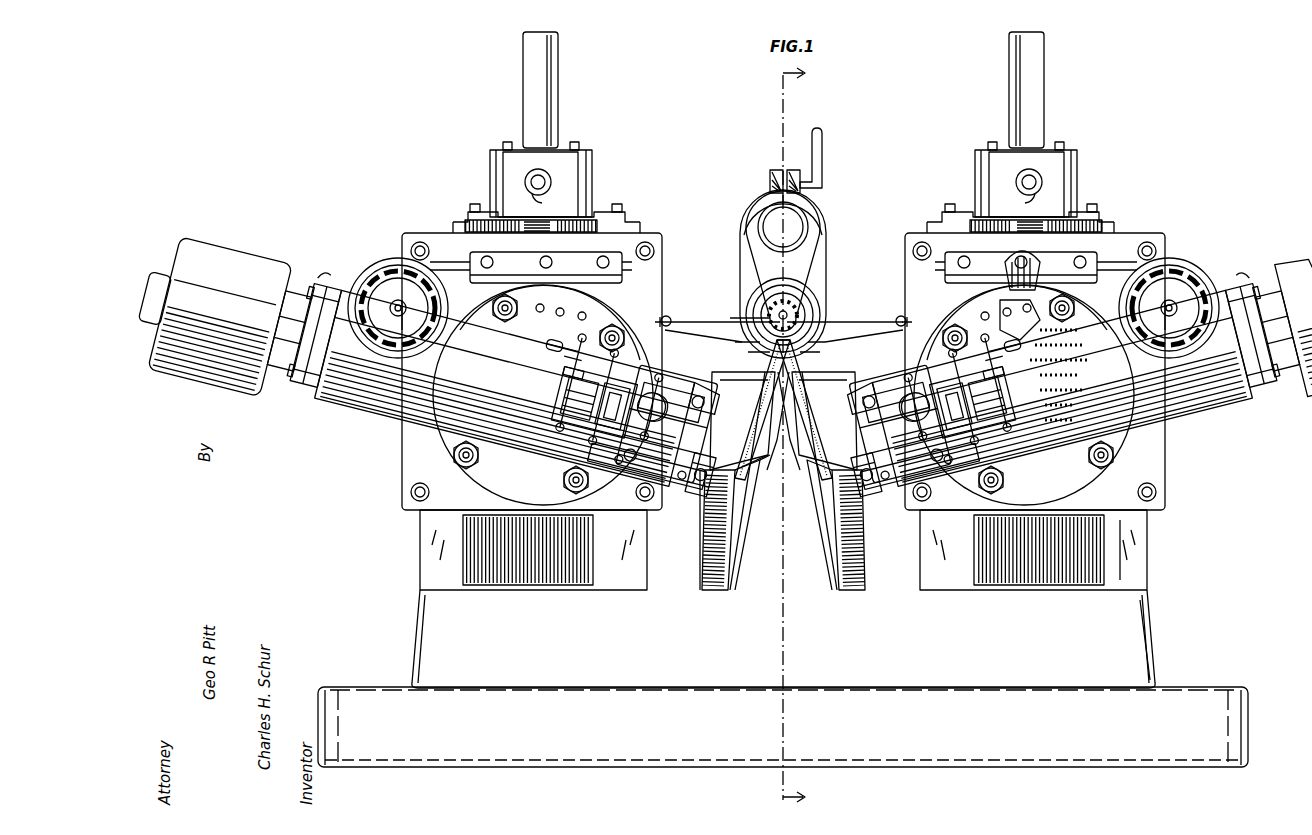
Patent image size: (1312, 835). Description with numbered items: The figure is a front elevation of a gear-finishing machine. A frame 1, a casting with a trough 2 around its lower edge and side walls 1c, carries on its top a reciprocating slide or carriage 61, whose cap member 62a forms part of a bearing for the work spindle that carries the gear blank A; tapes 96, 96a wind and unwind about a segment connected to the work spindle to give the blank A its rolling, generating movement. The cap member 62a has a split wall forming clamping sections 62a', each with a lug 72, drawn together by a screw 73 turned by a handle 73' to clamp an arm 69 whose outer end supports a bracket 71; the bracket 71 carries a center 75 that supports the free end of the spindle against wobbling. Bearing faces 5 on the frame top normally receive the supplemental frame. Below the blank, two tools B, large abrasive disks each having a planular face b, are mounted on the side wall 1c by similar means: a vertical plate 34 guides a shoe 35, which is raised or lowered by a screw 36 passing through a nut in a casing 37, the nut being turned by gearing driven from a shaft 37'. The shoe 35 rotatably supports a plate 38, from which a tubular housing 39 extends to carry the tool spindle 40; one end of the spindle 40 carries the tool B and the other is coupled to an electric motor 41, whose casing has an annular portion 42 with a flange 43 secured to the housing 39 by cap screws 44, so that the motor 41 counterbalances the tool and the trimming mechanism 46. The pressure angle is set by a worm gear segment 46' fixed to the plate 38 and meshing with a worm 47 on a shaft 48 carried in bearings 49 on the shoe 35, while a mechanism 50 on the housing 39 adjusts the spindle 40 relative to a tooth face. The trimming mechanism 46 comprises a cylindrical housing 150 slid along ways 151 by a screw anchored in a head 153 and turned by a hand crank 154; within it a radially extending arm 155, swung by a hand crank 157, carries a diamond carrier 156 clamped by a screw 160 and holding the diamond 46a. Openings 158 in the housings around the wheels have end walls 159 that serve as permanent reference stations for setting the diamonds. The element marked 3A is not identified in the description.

The frame 1 is at (767, 639).
The side wall 1c is at (1082, 639).
The trough 2 is at (1185, 705).
The pedestal column 3A is at (1120, 550).
The bearing face 5 is at (806, 432).
The vertical plate 34 is at (783, 550).
The shoe 35 is at (783, 304).
The screw 36 is at (552, 225).
The casing 37 is at (783, 132).
The shaft 37' is at (783, 192).
The plate 38 is at (783, 371).
The tubular member 39 is at (505, 388).
The tool spindle 40 is at (1061, 388).
The electric motor 41 is at (719, 314).
The extended annular portion 42 is at (295, 304).
The flange 43 is at (1252, 310).
The cap screws 44 is at (312, 288).
The trimming mechanism 46 is at (784, 424).
The worm gear segment 46' is at (1020, 331).
The diamond 46a is at (800, 495).
The worm 47 is at (1020, 250).
The shaft 48 is at (447, 268).
The bearings 49 is at (783, 267).
The mechanism 50 is at (783, 308).
The slide or carriage 61 is at (784, 343).
The cap member 62a is at (803, 274).
The clamping sections 62a' is at (794, 218).
The arm 69 is at (783, 227).
The bracket 71 is at (783, 261).
The lug 72 is at (792, 170).
The screw 73 is at (756, 181).
The handle 73' is at (828, 158).
The center 75 is at (805, 315).
The tape 96 is at (700, 320).
The tape 96a is at (848, 320).
The cylindrical housing 150 is at (665, 390).
The ways 151 is at (630, 390).
The head 153 is at (575, 384).
The hand crank 154 is at (555, 370).
The radially extending arm 155 is at (690, 492).
The diamond carrier 156 is at (712, 498).
The hand crank 157 is at (660, 326).
The opening 158 is at (728, 540).
The end wall 159 is at (815, 553).
The bolt or screw 160 is at (730, 470).
The gear blank A is at (741, 317).
The tool B is at (780, 355).
The planular face b is at (779, 340).